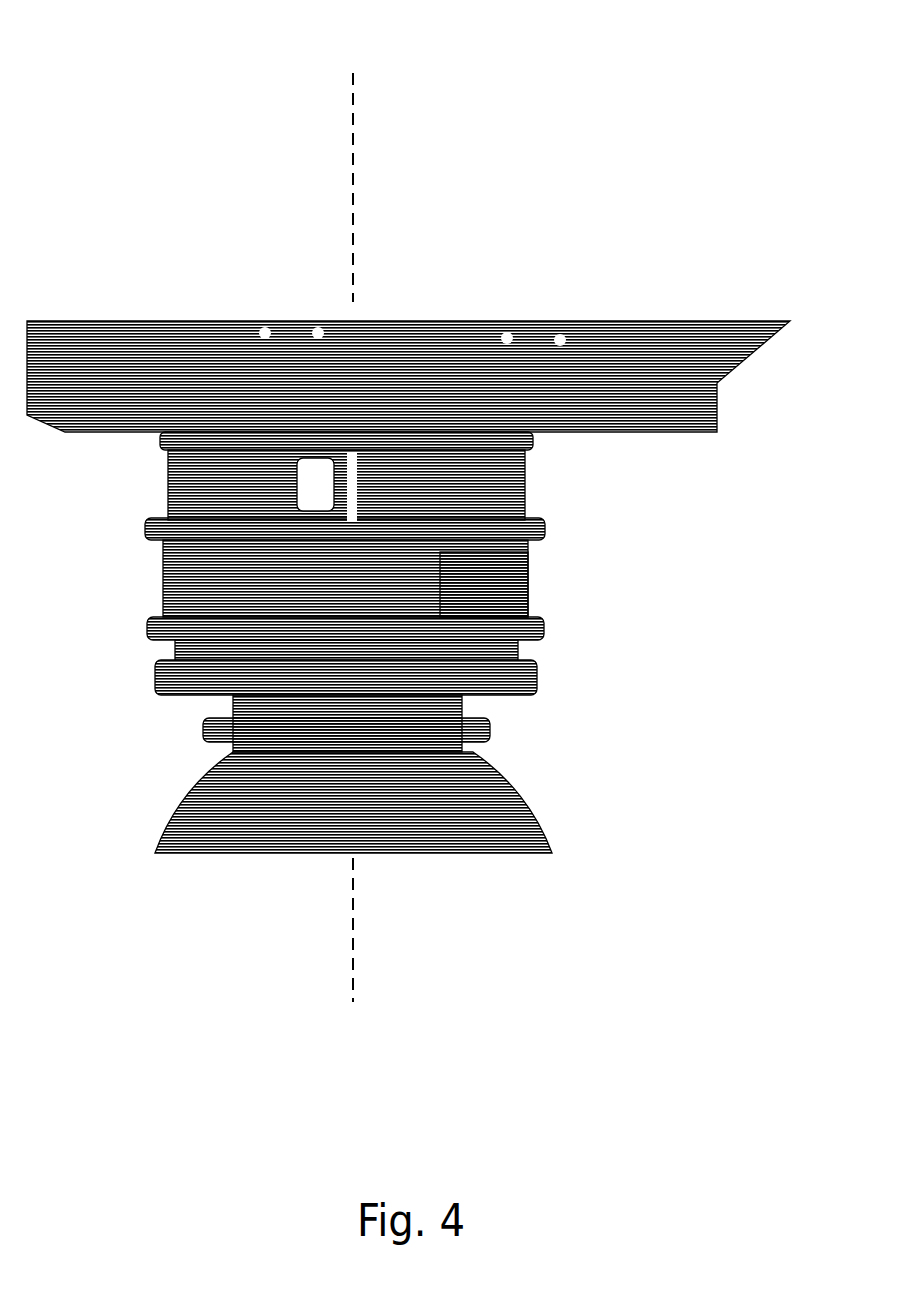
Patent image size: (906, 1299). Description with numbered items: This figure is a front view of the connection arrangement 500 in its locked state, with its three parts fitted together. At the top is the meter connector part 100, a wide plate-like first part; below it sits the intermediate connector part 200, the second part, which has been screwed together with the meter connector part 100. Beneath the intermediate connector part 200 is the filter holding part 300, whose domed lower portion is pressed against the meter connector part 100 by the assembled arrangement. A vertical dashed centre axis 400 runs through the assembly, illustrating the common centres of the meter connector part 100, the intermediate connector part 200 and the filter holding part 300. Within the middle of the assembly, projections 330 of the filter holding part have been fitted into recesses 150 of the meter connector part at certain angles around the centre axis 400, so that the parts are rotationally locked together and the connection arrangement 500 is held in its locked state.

The connection arrangement 500 is at (99, 34).
The centre axis 400 is at (353, 236).
The meter connector part 100 is at (79, 282).
The intermediate connector part 200 is at (128, 566).
The recesses 150 is at (287, 584).
The projections 330 is at (457, 576).
The filter holding part 300 is at (148, 793).